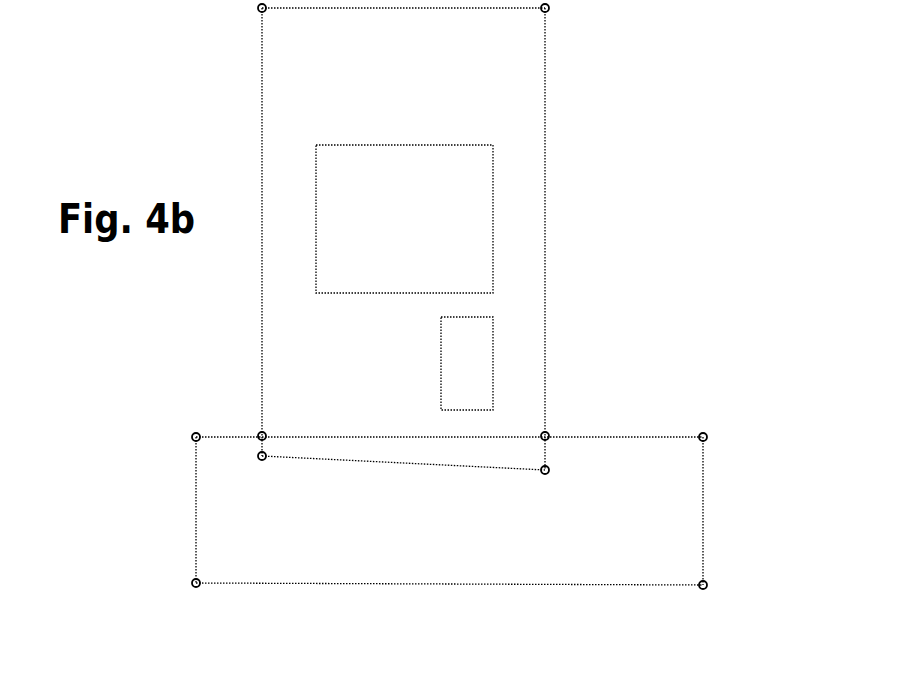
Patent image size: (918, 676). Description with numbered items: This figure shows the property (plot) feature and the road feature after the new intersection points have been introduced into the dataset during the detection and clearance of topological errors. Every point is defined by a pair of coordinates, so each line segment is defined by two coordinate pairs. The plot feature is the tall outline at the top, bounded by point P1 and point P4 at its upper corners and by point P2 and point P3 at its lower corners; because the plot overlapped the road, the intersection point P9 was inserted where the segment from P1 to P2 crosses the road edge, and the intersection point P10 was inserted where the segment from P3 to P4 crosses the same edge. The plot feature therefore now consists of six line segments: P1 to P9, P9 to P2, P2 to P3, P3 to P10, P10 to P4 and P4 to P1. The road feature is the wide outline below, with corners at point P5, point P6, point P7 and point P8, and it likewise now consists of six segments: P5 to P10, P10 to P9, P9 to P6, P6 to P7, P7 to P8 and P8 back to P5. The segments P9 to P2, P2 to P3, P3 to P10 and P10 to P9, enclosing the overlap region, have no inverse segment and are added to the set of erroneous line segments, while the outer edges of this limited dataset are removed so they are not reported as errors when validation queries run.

The point P1 is at (246, 17).
The point P2 is at (247, 465).
The point P3 is at (564, 470).
The point P4 is at (563, 18).
The point P5 is at (724, 443).
The point P6 is at (176, 436).
The point P7 is at (176, 586).
The point P8 is at (725, 593).
The intersection point P9 is at (246, 414).
The intersection point P10 is at (569, 419).